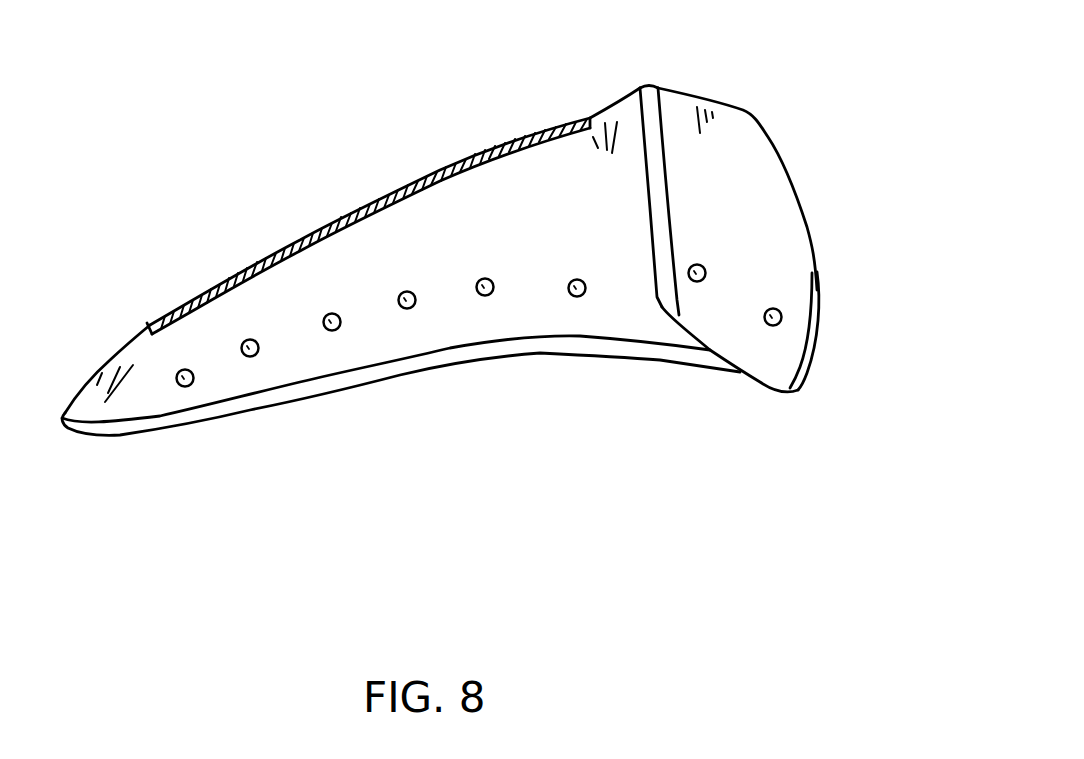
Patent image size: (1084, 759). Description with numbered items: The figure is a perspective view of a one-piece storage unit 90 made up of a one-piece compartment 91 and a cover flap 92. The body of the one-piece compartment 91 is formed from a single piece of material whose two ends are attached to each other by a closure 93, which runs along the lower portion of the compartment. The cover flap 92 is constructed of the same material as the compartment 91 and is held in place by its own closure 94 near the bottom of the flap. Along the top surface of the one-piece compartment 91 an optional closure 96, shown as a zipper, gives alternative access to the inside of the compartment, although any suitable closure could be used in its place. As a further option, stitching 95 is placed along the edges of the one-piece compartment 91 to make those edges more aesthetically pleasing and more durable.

The one-piece storage unit 90 is at (280, 103).
The one-piece compartment 91 is at (253, 310).
The cover flap 92 is at (725, 190).
The closure 93 is at (463, 346).
The closure 94 is at (736, 320).
The stitching 95 is at (808, 326).
The closure 96 is at (492, 143).